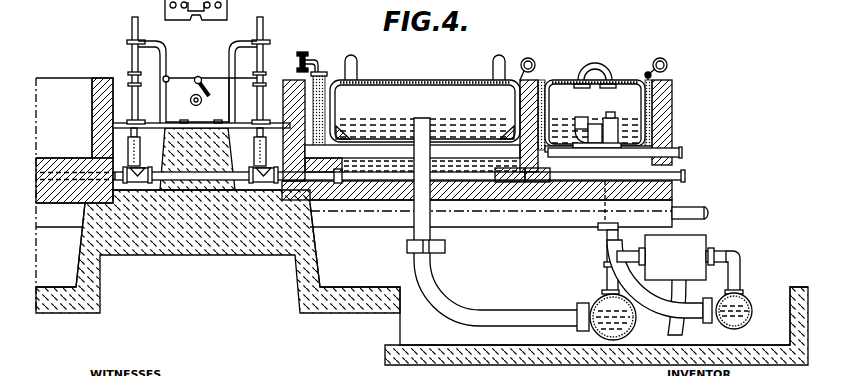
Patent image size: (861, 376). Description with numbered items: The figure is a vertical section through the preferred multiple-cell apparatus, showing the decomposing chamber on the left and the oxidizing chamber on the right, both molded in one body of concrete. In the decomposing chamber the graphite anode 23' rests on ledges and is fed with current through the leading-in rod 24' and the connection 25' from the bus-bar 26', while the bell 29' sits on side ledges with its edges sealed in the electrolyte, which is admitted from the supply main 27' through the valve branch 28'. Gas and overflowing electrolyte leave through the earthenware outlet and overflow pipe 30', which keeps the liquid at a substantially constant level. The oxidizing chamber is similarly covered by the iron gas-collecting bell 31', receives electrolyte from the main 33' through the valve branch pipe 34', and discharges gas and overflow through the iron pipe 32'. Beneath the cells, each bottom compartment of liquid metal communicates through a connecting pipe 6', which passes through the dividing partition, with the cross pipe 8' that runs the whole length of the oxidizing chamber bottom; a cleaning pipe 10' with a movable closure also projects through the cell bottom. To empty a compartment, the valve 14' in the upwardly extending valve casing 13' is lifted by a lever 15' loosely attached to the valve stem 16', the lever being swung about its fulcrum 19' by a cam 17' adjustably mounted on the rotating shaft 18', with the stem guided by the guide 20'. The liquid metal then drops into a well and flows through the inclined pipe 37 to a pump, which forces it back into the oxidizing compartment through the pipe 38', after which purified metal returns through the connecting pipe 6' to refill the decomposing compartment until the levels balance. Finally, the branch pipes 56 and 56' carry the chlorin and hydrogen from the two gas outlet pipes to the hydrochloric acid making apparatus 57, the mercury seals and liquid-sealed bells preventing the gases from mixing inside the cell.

The cleaning pipe 10' is at (369, 167).
The valve casing 13' is at (200, 169).
The valve 14' is at (197, 147).
The lever 15' is at (249, 70).
The valve stem 16' is at (249, 104).
The cam 17' is at (203, 100).
The rotating shaft 18' is at (186, 104).
The fulcrum 19' is at (192, 70).
The guide 20' is at (294, 53).
The anode 23' is at (412, 153).
The leading-in rod 24' is at (425, 111).
The connection 25' is at (330, 100).
The bus-bar 26' is at (320, 56).
The supply main 27' is at (537, 59).
The valve branch 28' is at (510, 59).
The bell 29' is at (425, 70).
The gas outlet and overflow pipe 30' is at (498, 215).
The gas-collecting bell 31' is at (584, 73).
The gas outlet and overflow pipe 32' is at (596, 124).
The main 33' is at (666, 53).
The valve branch pipe 34' is at (638, 65).
The inclined pipe 37 is at (690, 206).
The pipe 38' is at (623, 140).
The branch pipe 56 is at (607, 281).
The branch pipe 56' is at (736, 297).
The hydrochloric acid making apparatus 57 is at (680, 264).
The connecting pipe 6' is at (511, 209).
The cross pipe 8' is at (537, 209).